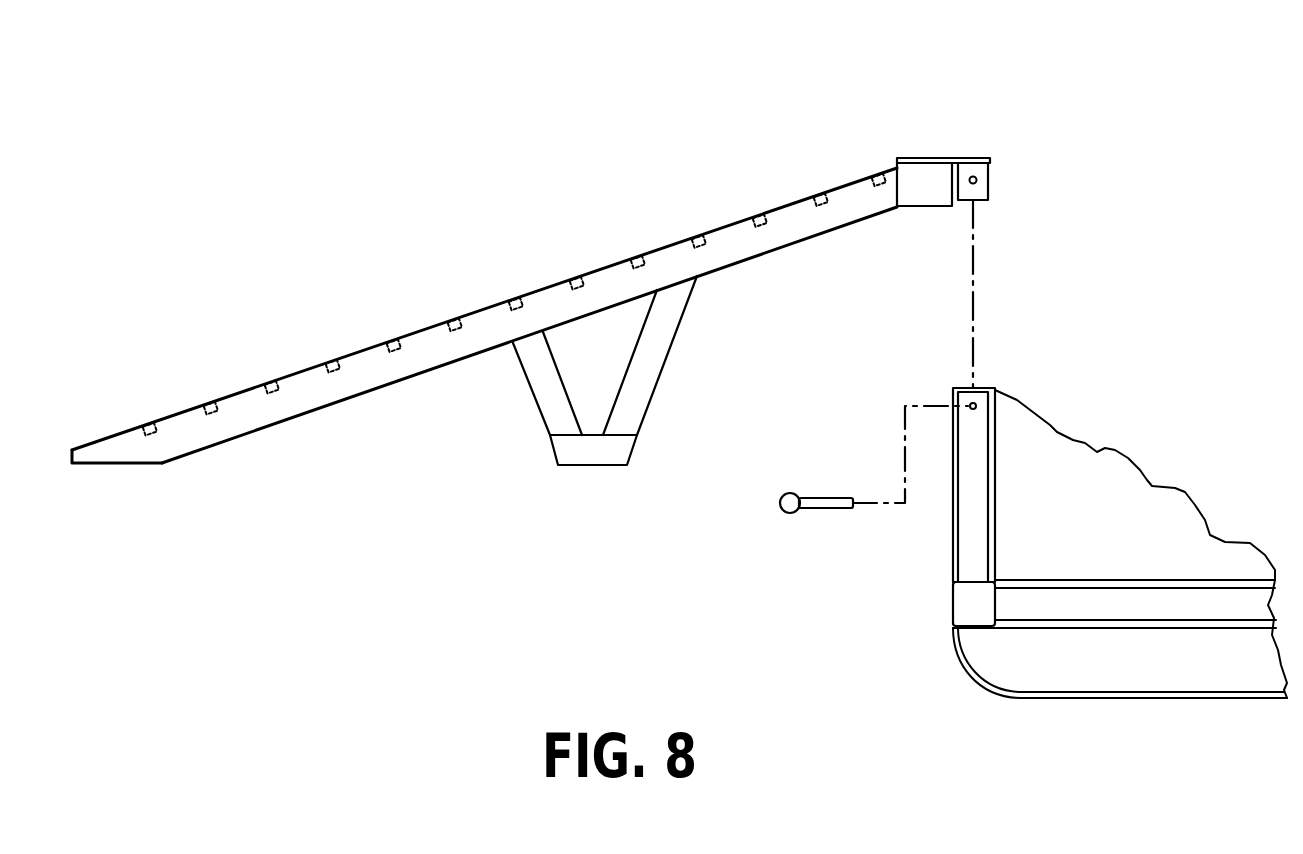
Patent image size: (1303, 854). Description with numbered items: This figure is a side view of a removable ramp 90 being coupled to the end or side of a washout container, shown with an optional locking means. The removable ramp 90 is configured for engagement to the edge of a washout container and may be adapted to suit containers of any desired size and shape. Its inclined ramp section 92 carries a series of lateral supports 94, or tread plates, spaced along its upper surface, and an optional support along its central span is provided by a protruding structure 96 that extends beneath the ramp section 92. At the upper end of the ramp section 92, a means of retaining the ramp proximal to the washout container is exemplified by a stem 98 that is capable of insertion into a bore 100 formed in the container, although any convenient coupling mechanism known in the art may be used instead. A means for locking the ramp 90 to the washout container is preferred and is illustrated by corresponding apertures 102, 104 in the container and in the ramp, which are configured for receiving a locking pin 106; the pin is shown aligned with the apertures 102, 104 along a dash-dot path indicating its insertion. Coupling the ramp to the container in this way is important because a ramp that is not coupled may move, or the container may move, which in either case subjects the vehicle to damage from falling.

The removable ramp 90 is at (252, 73).
The ramp section 92 is at (720, 226).
The lateral supports 94 is at (215, 401).
The protruding structure 96 is at (532, 398).
The stem 98 is at (977, 182).
The bore 100 is at (984, 388).
The aperture 102 is at (971, 402).
The aperture 104 is at (984, 206).
The locking pin 106 is at (842, 510).